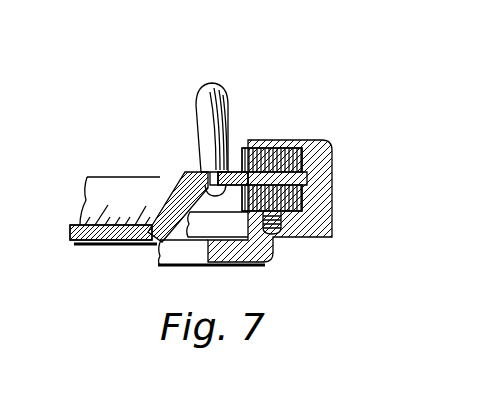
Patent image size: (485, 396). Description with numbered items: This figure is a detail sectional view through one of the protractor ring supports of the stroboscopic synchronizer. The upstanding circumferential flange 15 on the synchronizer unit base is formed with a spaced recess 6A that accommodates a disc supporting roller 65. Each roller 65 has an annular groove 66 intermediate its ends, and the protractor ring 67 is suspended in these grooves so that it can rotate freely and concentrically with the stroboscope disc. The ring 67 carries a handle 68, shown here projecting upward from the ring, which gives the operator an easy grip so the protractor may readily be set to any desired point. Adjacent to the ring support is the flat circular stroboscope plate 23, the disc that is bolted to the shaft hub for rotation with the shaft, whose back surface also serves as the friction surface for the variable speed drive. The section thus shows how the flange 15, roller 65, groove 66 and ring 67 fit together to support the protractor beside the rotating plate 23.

The upstanding circumferential flange 15 is at (329, 140).
The disc supporting roller 65 is at (278, 148).
The annular groove 66 is at (292, 178).
The slot 6A is at (304, 174).
The protractor ring 67 is at (198, 143).
The handle 68 is at (222, 89).
The stroboscope plate 23 is at (103, 236).